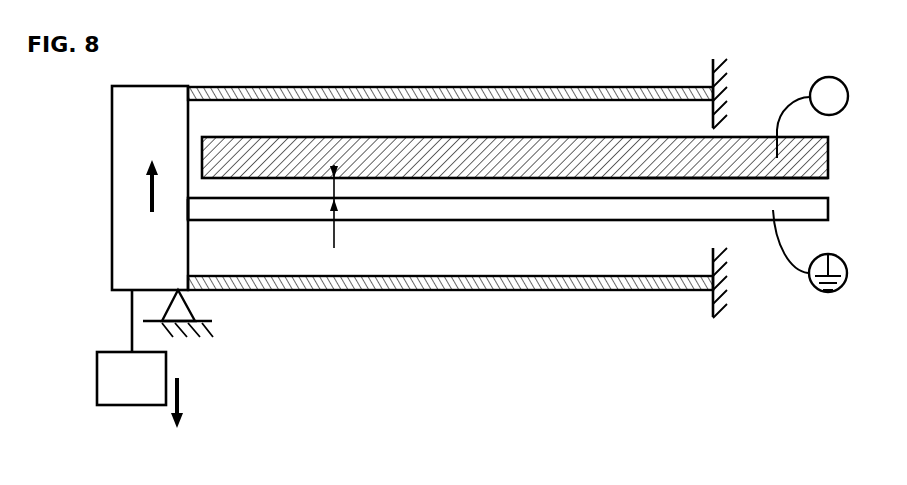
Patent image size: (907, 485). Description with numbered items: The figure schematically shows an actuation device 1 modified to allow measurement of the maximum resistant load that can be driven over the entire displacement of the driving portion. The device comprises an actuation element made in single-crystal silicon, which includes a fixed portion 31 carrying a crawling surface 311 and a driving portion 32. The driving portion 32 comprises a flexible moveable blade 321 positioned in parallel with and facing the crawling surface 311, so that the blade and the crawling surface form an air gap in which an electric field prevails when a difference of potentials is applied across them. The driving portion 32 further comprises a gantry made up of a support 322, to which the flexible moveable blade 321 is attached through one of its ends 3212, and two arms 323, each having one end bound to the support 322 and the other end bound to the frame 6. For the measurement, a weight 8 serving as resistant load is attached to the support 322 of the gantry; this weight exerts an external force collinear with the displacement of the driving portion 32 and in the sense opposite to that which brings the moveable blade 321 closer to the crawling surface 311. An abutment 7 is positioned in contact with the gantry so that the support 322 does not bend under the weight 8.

The actuation device 1 is at (272, 38).
The frame 6 is at (710, 62).
The abutment 7 is at (196, 303).
The weight 8 is at (131, 406).
The fixed portion 31 is at (751, 148).
The driving portion 32 is at (498, 70).
The crawling surface 311 is at (808, 180).
The flexible moveable blade 321 is at (440, 222).
The support 322 is at (127, 184).
The arms 323 is at (450, 87).
The end of the moveable blade 3212 is at (188, 222).